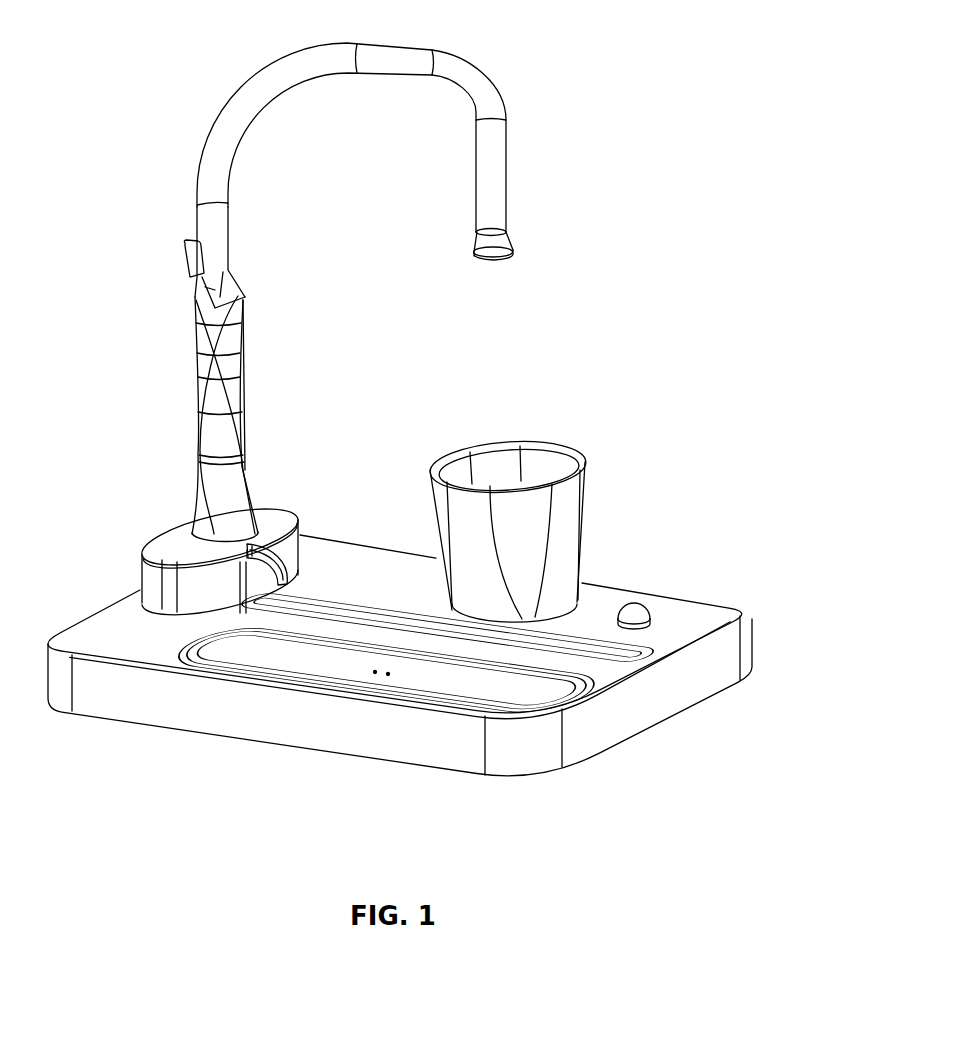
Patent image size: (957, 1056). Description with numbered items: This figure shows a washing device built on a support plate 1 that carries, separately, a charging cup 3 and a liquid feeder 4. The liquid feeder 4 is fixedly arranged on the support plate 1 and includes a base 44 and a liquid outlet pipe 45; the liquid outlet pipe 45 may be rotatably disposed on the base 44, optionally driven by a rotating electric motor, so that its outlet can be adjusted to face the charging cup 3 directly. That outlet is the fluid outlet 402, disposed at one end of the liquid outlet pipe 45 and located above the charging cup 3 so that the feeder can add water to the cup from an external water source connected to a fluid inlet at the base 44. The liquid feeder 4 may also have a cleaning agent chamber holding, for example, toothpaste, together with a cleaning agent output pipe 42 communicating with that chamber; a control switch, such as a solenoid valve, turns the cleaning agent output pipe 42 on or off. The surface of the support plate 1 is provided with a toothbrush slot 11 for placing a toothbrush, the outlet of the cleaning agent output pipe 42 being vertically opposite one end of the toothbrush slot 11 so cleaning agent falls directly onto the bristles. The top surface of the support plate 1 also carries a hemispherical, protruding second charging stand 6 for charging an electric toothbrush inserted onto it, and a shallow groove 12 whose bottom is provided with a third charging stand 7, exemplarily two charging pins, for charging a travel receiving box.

The support plate 1 is at (668, 597).
The toothbrush slot 11 is at (625, 658).
The shallow groove 12 is at (470, 697).
The third charging stand 7 is at (388, 674).
The second charging stand 6 is at (632, 598).
The charging cup 3 is at (499, 457).
The liquid feeder 4 is at (183, 243).
The base 44 is at (175, 545).
The cleaning agent output pipe 42 is at (300, 533).
The liquid outlet pipe 45 is at (258, 94).
The fluid outlet 402 is at (508, 258).